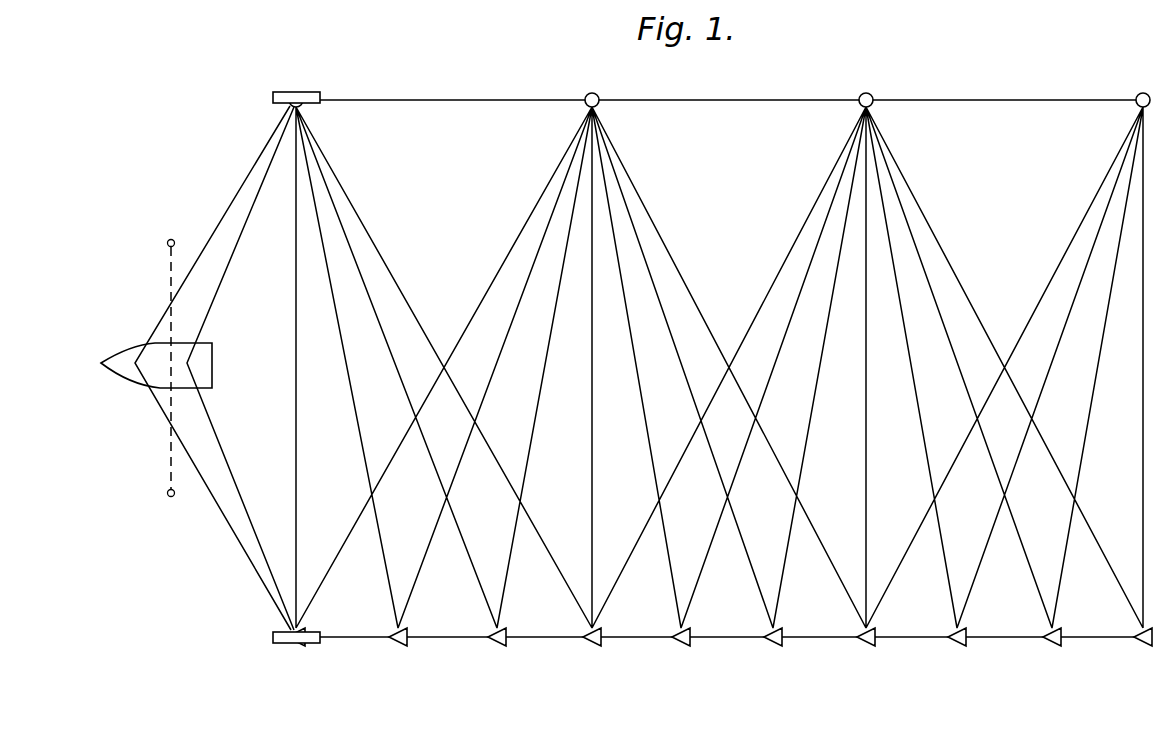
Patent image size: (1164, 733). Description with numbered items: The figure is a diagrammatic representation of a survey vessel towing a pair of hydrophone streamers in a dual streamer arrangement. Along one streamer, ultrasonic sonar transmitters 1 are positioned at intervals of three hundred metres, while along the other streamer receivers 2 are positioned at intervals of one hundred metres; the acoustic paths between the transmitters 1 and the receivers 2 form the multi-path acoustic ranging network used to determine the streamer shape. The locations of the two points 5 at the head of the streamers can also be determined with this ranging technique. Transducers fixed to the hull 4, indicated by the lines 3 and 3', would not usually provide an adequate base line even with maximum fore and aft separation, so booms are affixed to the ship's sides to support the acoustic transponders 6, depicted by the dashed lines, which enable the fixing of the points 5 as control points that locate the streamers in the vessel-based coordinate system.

The ultrasonic sonar transmitters 1 is at (719, 84).
The receivers 2 is at (719, 650).
The line indicating hull-fixed transducer 3 is at (213, 368).
The line indicating hull-fixed transducer 3' is at (240, 368).
The hull 4 is at (116, 358).
The points 5 is at (270, 96).
The acoustic transponders 6 is at (170, 239).